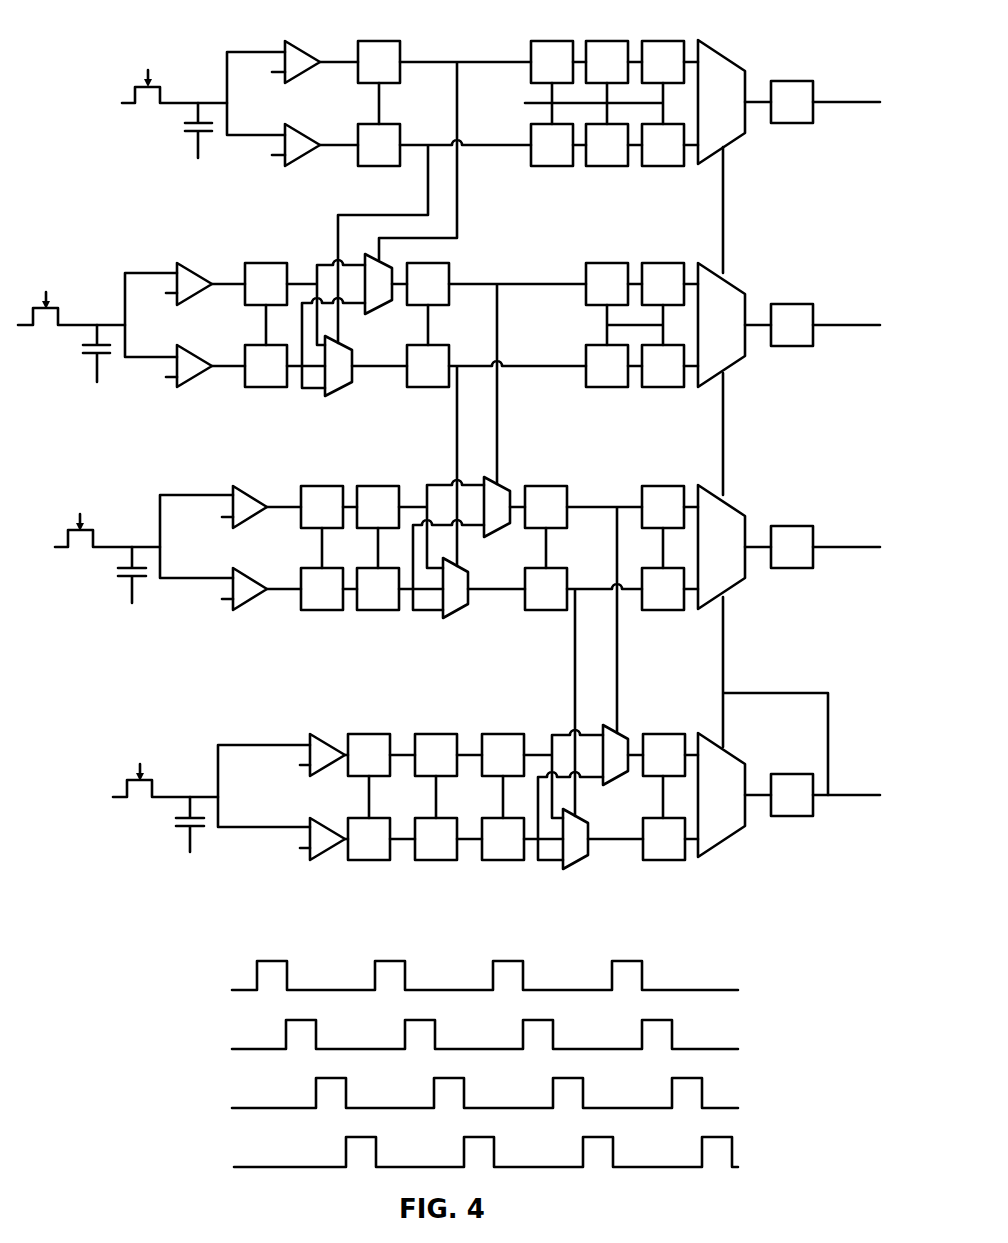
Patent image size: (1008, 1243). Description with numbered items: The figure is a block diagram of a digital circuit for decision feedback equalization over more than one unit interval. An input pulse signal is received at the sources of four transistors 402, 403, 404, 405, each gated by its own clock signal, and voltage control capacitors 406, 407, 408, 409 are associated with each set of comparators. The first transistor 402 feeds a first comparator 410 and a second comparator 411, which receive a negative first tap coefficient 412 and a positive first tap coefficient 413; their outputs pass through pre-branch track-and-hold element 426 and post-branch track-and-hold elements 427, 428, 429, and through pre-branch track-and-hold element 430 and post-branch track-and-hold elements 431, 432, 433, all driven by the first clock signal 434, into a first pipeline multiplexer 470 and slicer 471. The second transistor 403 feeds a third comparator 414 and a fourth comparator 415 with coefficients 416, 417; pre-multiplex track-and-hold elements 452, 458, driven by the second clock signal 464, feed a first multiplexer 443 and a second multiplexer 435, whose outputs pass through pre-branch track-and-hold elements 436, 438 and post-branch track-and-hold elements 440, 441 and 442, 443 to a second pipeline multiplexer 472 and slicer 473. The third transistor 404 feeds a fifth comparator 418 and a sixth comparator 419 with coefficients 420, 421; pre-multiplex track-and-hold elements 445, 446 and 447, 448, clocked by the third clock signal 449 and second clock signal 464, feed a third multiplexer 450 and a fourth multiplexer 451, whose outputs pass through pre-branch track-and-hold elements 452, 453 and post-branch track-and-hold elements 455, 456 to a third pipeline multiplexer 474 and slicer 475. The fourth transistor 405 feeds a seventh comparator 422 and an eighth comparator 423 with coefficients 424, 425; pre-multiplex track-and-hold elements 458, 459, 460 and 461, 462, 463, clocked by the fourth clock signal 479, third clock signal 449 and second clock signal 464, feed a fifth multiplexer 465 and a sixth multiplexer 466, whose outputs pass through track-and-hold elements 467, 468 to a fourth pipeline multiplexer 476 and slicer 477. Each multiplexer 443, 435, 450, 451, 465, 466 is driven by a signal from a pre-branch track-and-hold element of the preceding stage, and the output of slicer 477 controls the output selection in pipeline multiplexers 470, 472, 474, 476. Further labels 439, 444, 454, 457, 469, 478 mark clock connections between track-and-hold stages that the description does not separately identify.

The first transistor 402 is at (160, 90).
The second transistor 403 is at (58, 308).
The third transistor 404 is at (93, 530).
The fourth transistor 405 is at (152, 780).
The voltage control capacitor 406 is at (185, 125).
The voltage control capacitor 407 is at (83, 347).
The voltage control capacitor 408 is at (118, 569).
The voltage control capacitor 409 is at (176, 820).
The first comparator 410 is at (287, 41).
The second comparator 411 is at (287, 124).
The negative first tap coefficient 412 is at (275, 72).
The positive first tap coefficient 413 is at (275, 155).
The third comparator 414 is at (178, 263).
The fourth comparator 415 is at (178, 345).
The negative first tap coefficient 416 is at (166, 293).
The positive first tap coefficient 417 is at (166, 377).
The fifth comparator 418 is at (235, 486).
The sixth comparator 419 is at (235, 568).
The negative first tap coefficient 420 is at (222, 517).
The positive first tap coefficient 421 is at (222, 599).
The seventh comparator 422 is at (312, 734).
The eighth comparator 423 is at (312, 818).
The negative first tap coefficient 424 is at (300, 765).
The positive first tap coefficient 425 is at (300, 848).
The pre-branch track-and-hold element 426 is at (372, 41).
The post-branch track-and-hold element 427 is at (548, 41).
The post-branch track-and-hold element 428 is at (602, 41).
The post-branch track-and-hold element 429 is at (658, 41).
The pre-branch track-and-hold element 430 is at (372, 166).
The post-branch track-and-hold element 431 is at (540, 166).
The post-branch track-and-hold element 432 is at (598, 166).
The post-branch track-and-hold element 433 is at (655, 166).
The first clock signal 434 is at (379, 103).
The second multiplexer 435 is at (330, 397).
The pre-branch track-and-hold element 436 is at (447, 263).
The pre-branch track-and-hold element 438 is at (430, 387).
The clock signal 439 is at (428, 325).
The post-branch track-and-hold element 440 is at (602, 263).
The post-branch track-and-hold element 441 is at (658, 263).
The post-branch track-and-hold element 442 is at (600, 387).
The first multiplexer 443 is at (368, 313).
The clock signal 444 is at (378, 555).
The first pre-multiplex track-and-hold element 445 is at (325, 486).
The second pre-multiplex track-and-hold element 446 is at (375, 486).
The first pre-multiplex track-and-hold element 447 is at (315, 610).
The second pre-multiplex track-and-hold element 448 is at (375, 610).
The third clock signal 449 is at (322, 547).
The third multiplexer 450 is at (487, 539).
The fourth multiplexer 451 is at (447, 620).
The track-and-hold element 452 is at (260, 263).
The pre-branch track-and-hold element 453 is at (545, 610).
The clock signal 454 is at (546, 563).
The post-branch track-and-hold element 455 is at (660, 486).
The post-branch track-and-hold element 456 is at (662, 610).
The clock signal 457 is at (436, 797).
The track-and-hold element 458 is at (270, 387).
The second pre-multiplex track-and-hold element 459 is at (433, 734).
The third pre-multiplex track-and-hold element 460 is at (500, 734).
The first pre-multiplex track-and-hold element 461 is at (360, 860).
The second pre-multiplex track-and-hold element 462 is at (430, 860).
The third pre-multiplex track-and-hold element 463 is at (500, 860).
The second clock signal 464 is at (266, 325).
The fifth multiplexer 465 is at (617, 733).
The sixth multiplexer 466 is at (575, 870).
The track-and-hold element 467 is at (678, 734).
The track-and-hold element 468 is at (660, 860).
The clock signal 469 is at (663, 800).
The first pipeline multiplexer 470 is at (745, 136).
The slicer 471 is at (790, 81).
The second pipeline multiplexer 472 is at (745, 357).
The slicer 473 is at (790, 304).
The third pipeline multiplexer 474 is at (745, 579).
The slicer 475 is at (790, 526).
The fourth pipeline multiplexer 476 is at (745, 828).
The slicer 477 is at (795, 775).
The clock signal 478 is at (503, 797).
The fourth clock signal 479 is at (234, 1167).